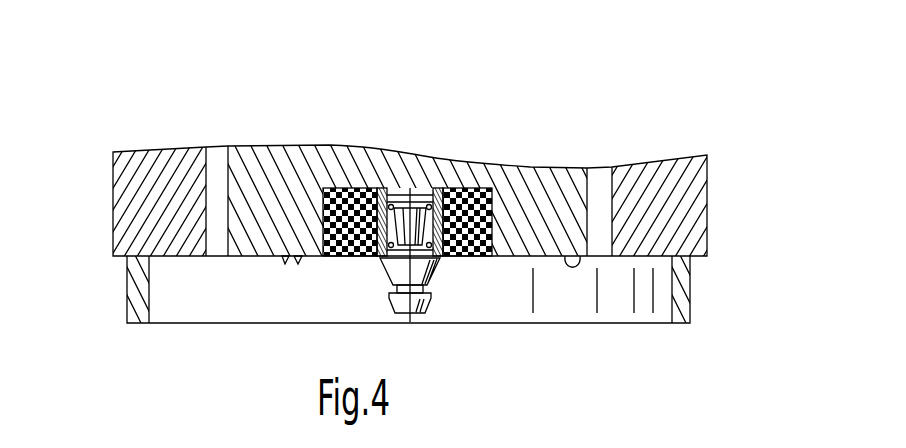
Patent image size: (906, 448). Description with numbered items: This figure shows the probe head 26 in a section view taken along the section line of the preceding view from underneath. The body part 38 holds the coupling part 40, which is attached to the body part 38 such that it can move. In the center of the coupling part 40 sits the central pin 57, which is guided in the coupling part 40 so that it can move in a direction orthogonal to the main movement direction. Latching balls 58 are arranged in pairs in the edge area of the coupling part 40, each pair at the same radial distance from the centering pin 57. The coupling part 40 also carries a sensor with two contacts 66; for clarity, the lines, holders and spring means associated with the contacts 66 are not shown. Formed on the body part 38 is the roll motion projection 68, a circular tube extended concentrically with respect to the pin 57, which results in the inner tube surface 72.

The probe head 26 is at (410, 205).
The body part 38 is at (693, 177).
The coupling part 40 is at (273, 155).
The central pin 57 is at (393, 303).
The latching balls 58 is at (570, 268).
The contacts 66 is at (285, 262).
The roll motion projection 68 is at (690, 290).
The inner tube surface 72 is at (514, 294).